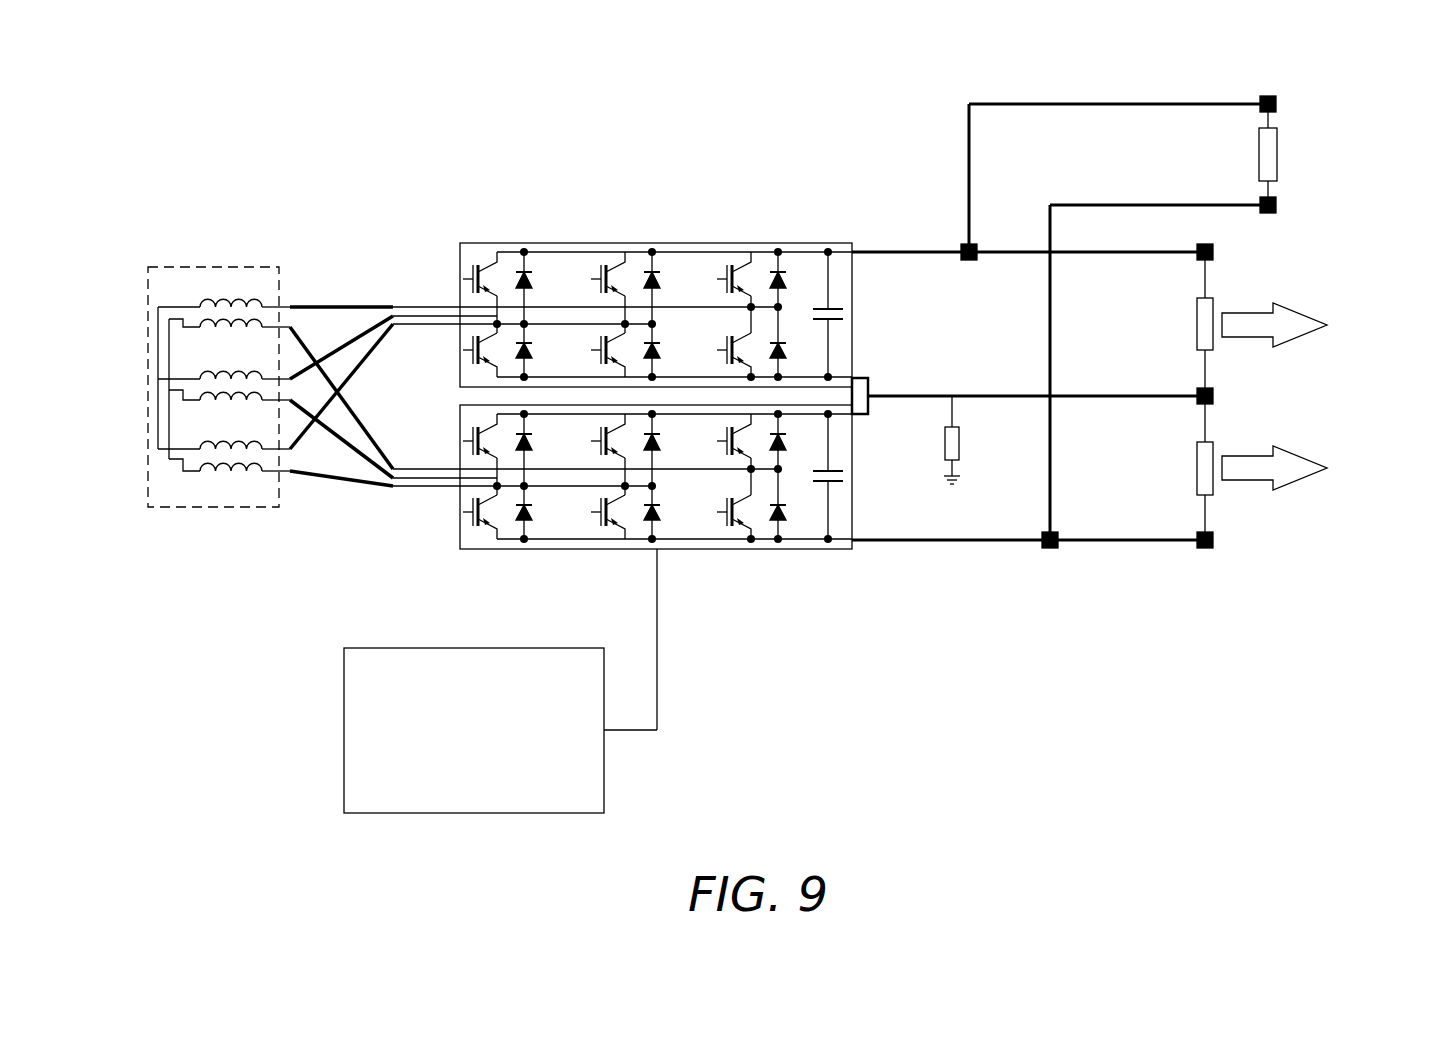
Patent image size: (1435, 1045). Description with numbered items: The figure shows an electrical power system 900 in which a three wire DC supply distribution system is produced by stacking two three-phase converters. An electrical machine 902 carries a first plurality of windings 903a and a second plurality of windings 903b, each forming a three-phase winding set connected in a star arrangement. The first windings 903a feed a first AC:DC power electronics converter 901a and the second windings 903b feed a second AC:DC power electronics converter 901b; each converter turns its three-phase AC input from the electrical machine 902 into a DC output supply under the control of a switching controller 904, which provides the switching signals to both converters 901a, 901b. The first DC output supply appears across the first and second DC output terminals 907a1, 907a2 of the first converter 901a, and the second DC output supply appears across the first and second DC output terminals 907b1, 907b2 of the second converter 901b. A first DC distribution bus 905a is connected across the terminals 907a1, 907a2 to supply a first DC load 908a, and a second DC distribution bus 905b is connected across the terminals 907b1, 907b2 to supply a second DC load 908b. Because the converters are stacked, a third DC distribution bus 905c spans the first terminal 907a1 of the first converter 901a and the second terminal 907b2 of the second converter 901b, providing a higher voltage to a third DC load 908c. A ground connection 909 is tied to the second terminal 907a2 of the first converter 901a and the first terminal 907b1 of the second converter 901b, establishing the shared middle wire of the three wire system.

The electrical power system 900 is at (272, 72).
The first AC:DC power electronics converter 901a is at (465, 549).
The second AC:DC power electronics converter 901b is at (468, 243).
The electrical machine 902 is at (150, 268).
The first plurality of windings 903a is at (169, 459).
The second plurality of windings 903b is at (158, 310).
The switching controller 904 is at (500, 681).
The first DC distribution bus 905a is at (1326, 457).
The second DC distribution bus 905b is at (1326, 315).
The third DC distribution bus 905c is at (1224, 318).
The first DC output terminal of the first AC:DC power electronics converter 907a1 is at (862, 549).
The second DC output terminal of the first AC:DC power electronics converter 907a2 is at (860, 414).
The first DC output terminal of the second AC:DC power electronics converter 907b1 is at (862, 378).
The second DC output terminal of the second AC:DC power electronics converter 907b2 is at (862, 252).
The first DC load 908a is at (1197, 465).
The second DC load 908b is at (1197, 320).
The third DC load 908c is at (1259, 152).
The ground connection 909 is at (956, 472).